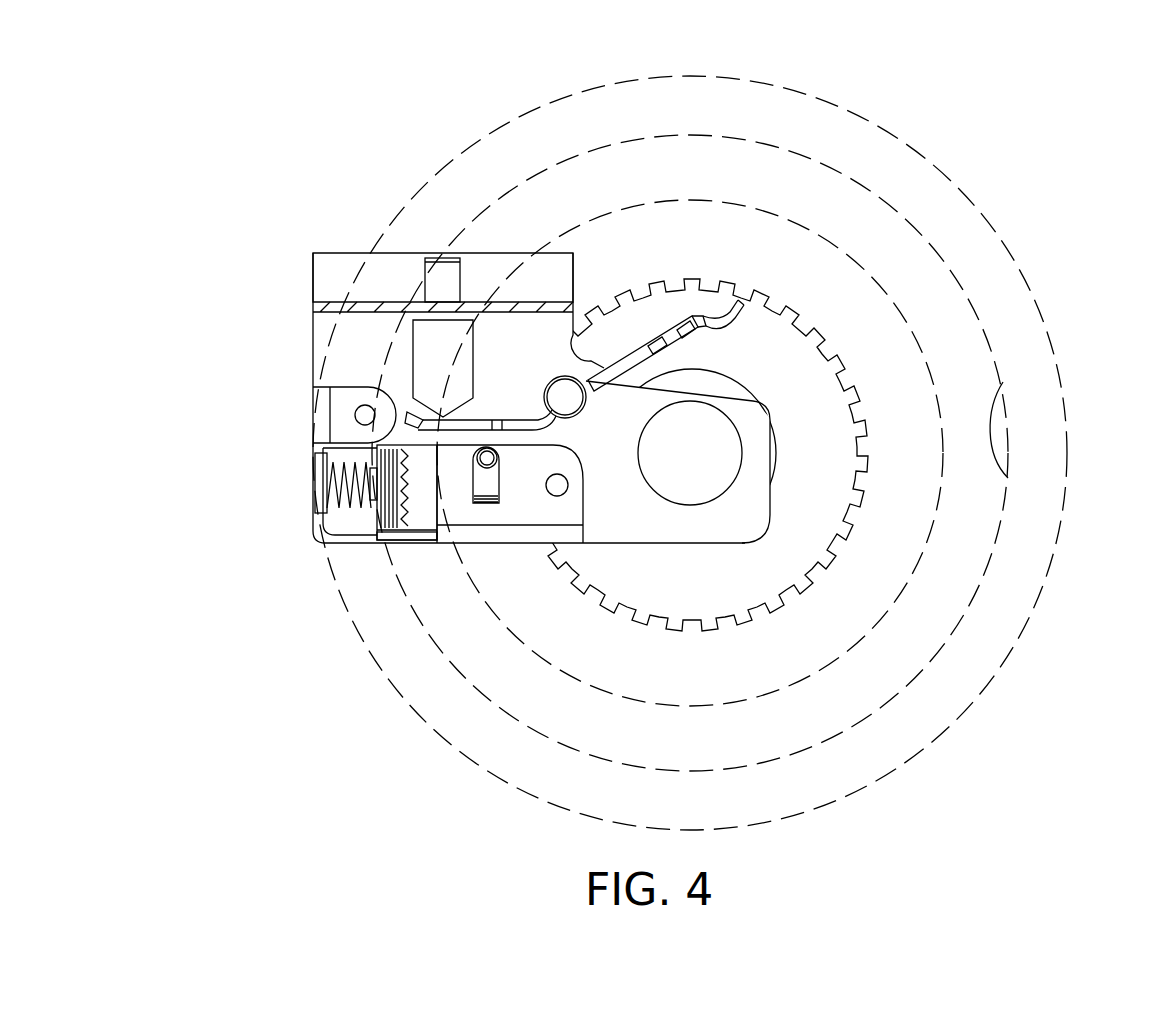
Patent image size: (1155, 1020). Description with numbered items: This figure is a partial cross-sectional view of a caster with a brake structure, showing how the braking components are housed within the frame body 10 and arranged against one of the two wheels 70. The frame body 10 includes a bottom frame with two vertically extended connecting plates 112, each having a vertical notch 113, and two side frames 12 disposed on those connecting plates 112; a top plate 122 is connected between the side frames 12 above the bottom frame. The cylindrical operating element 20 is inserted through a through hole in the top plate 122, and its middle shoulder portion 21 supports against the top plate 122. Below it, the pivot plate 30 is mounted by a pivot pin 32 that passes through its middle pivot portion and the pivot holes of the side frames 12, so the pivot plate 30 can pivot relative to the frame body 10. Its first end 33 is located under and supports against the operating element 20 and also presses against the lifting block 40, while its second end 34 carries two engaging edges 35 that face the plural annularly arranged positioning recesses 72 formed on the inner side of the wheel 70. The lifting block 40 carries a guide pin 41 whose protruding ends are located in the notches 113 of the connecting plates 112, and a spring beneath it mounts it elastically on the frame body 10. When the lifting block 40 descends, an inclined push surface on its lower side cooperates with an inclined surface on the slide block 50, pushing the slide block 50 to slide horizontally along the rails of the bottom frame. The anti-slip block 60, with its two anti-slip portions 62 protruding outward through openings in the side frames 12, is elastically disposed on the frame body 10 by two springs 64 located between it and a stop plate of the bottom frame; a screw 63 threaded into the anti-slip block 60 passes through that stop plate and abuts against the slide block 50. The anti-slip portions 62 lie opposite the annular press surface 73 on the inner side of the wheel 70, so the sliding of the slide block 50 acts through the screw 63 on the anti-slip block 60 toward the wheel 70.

The frame body 10 is at (290, 405).
The side frame 12 is at (322, 272).
The top plate 122 is at (328, 310).
The operating element 20 is at (447, 273).
The middle shoulder portion 21 is at (432, 320).
The pivot plate 30 is at (632, 345).
The pivot pin 32 is at (560, 393).
The first end 33 is at (388, 415).
The second end 34 is at (688, 318).
The engaging edge 35 is at (735, 310).
The lifting block 40 is at (527, 437).
The guide pin 41 is at (495, 455).
The slide block 50 is at (437, 480).
The anti-slip block 60 is at (360, 546).
The anti-slip portion 62 is at (420, 520).
The screw 63 is at (340, 503).
The spring 64 is at (340, 473).
The wheel 70 is at (968, 165).
The positioning recess 72 is at (820, 333).
The annular press surface 73 is at (1000, 468).
The connecting plate 112 is at (503, 527).
The vertical notch 113 is at (487, 543).